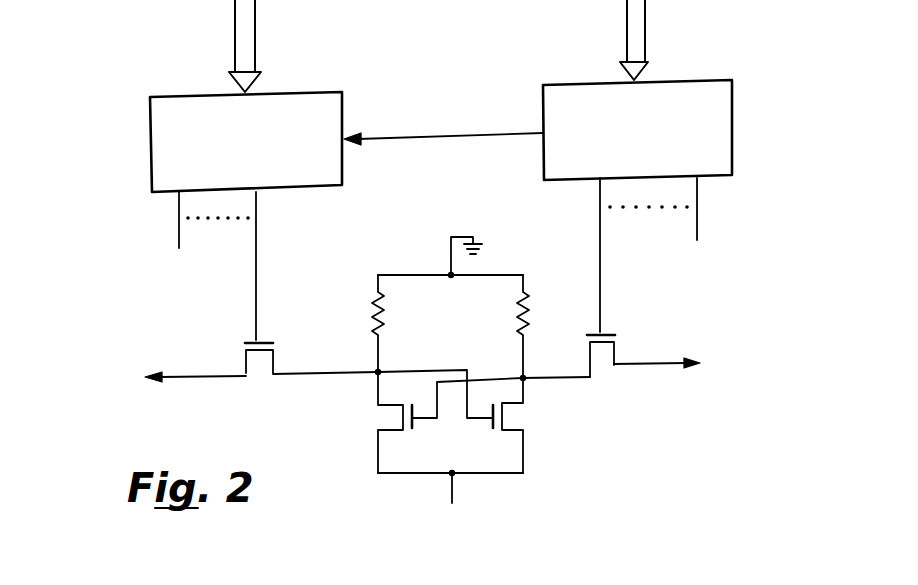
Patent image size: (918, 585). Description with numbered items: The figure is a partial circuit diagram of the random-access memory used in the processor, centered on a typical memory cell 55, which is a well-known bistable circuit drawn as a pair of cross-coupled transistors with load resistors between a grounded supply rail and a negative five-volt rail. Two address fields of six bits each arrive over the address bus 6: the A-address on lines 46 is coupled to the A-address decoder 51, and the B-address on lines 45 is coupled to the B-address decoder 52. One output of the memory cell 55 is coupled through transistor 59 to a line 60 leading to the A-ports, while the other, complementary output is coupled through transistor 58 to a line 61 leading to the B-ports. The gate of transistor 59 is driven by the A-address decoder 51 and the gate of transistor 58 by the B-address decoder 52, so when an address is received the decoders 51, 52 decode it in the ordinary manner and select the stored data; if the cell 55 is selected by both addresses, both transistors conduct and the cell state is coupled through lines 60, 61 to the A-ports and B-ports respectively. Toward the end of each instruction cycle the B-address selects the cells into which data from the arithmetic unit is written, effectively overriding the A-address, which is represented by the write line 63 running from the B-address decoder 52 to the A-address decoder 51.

The address bus 6 is at (225, 35).
The A-address lines 46 is at (235, 48).
The B-address lines 45 is at (627, 43).
The A-address decoder 51 is at (150, 116).
The B-address decoder 52 is at (732, 123).
The write line 63 is at (423, 140).
The transistor 59 is at (258, 362).
The transistor 58 is at (605, 356).
The line 60 is at (200, 374).
The line 61 is at (665, 363).
The memory cell 55 is at (462, 436).